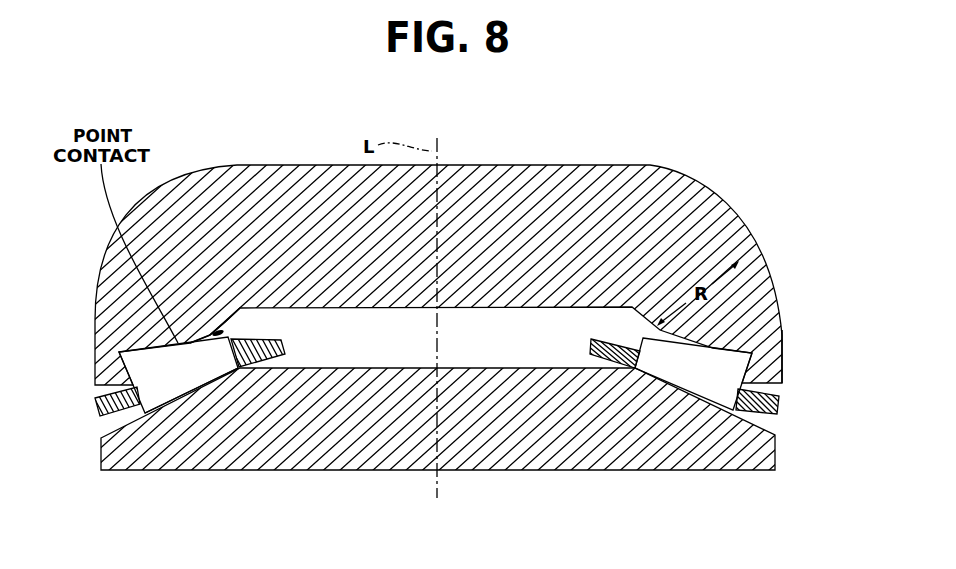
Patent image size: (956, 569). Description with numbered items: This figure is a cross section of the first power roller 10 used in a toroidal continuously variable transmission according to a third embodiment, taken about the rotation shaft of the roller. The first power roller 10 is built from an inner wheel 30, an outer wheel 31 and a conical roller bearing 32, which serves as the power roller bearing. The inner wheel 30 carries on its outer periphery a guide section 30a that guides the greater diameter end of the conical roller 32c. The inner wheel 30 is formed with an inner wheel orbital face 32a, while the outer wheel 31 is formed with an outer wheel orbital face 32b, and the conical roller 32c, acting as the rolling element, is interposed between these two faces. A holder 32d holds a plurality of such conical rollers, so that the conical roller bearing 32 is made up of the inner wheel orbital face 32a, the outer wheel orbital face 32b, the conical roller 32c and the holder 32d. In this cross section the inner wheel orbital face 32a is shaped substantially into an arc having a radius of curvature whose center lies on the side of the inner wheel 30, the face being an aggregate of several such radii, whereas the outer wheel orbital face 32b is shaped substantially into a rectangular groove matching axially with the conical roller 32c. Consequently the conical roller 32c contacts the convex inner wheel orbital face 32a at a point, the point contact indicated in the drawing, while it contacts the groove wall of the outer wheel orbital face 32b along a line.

The first power roller 10 is at (312, 118).
The inner wheel 30 is at (596, 160).
The guide section 30a is at (783, 361).
The outer wheel 31 is at (557, 479).
The conical roller bearing 32 is at (575, 342).
The inner wheel orbital face 32a is at (227, 318).
The outer wheel orbital face 32b is at (187, 397).
The conical roller 32c is at (200, 372).
The holder 32d is at (102, 412).